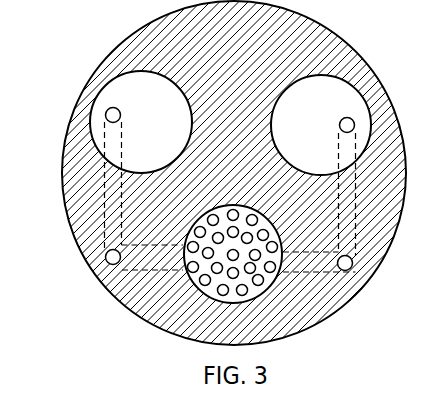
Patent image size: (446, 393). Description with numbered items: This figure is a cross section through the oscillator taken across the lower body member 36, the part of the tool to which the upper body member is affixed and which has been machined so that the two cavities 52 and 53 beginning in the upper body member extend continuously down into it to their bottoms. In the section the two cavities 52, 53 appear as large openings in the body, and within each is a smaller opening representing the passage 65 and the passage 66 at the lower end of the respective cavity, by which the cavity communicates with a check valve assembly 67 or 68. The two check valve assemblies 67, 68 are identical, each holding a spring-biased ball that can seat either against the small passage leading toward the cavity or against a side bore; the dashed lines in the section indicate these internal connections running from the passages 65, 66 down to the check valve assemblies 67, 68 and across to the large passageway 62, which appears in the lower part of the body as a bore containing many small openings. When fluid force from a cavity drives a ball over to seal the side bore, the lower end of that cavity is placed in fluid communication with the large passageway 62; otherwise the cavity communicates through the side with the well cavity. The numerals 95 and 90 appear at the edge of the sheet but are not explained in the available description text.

The lower body member 36 is at (160, 43).
The cavity 52 is at (130, 87).
The cavity 53 is at (348, 97).
The large passageway 62 is at (197, 276).
The passage 65 is at (112, 135).
The passage 66 is at (348, 145).
The check valve assembly 67 is at (107, 258).
The check valve assembly 68 is at (318, 281).
The element 95 is at (438, 240).
The element 90 is at (429, 278).